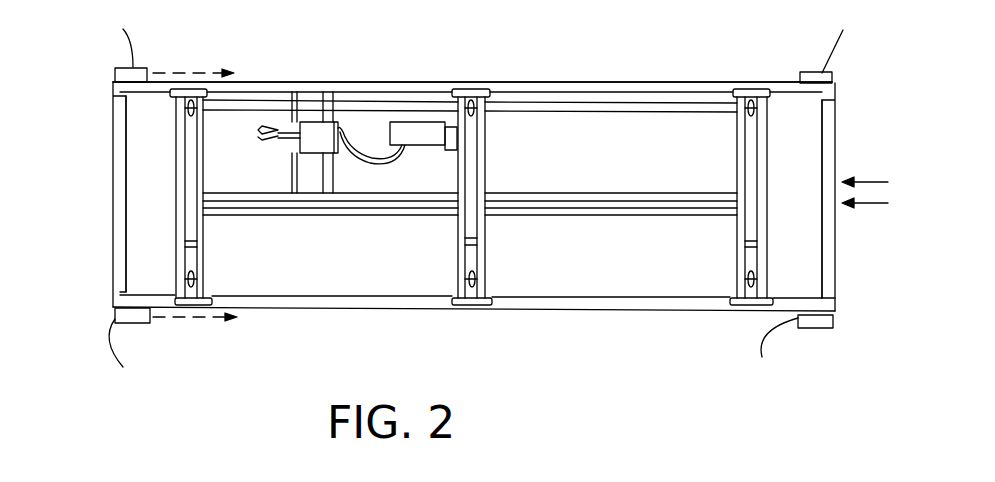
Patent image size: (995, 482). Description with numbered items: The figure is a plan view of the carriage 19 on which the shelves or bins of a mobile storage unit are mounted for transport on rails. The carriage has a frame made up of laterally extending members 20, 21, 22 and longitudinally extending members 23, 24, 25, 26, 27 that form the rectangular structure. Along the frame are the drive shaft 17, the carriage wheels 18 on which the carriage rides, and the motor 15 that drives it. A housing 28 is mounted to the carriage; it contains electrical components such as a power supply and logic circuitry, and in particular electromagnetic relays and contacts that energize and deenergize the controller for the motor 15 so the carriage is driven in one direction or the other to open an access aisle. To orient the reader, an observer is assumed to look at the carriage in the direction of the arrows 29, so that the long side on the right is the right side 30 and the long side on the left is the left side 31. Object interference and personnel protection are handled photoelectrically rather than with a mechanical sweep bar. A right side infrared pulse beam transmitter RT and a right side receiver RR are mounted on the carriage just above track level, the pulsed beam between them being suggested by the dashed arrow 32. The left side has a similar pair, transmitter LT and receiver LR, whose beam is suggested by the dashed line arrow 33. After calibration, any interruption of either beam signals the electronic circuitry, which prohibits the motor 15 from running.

The motor 15 is at (412, 132).
The drive shaft 17 is at (554, 105).
The carriage wheels 18 is at (753, 92).
The carriage 19 is at (89, 210).
The laterally extending member 20 is at (685, 85).
The laterally extending member 21 is at (695, 191).
The laterally extending member 22 is at (675, 297).
The longitudinally extending member 23 is at (123, 258).
The longitudinally extending member 24 is at (205, 270).
The longitudinally extending member 25 is at (488, 270).
The longitudinally extending member 26 is at (760, 230).
The longitudinally extending member 27 is at (828, 274).
The housing 28 is at (318, 140).
The arrows 29 is at (885, 192).
The right side 30 is at (633, 76).
The left side 31 is at (638, 320).
The dashed arrow 32 is at (180, 70).
The dashed line arrow 33 is at (187, 318).